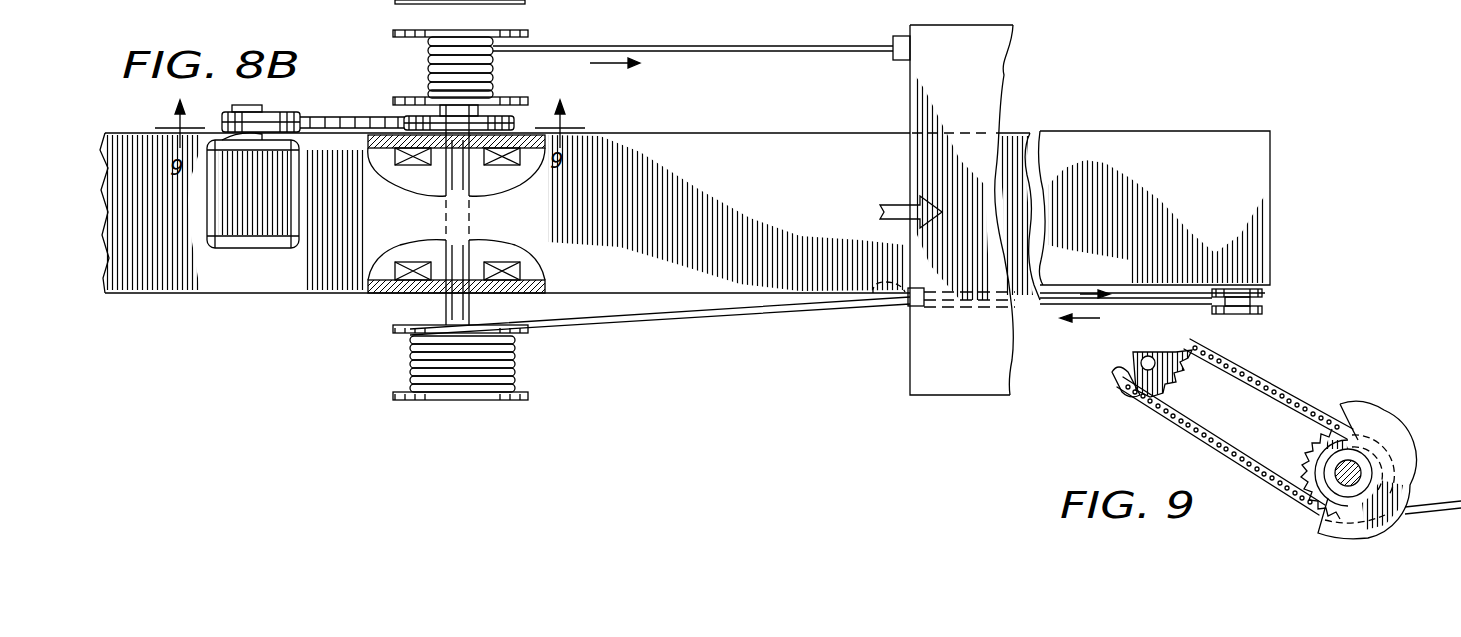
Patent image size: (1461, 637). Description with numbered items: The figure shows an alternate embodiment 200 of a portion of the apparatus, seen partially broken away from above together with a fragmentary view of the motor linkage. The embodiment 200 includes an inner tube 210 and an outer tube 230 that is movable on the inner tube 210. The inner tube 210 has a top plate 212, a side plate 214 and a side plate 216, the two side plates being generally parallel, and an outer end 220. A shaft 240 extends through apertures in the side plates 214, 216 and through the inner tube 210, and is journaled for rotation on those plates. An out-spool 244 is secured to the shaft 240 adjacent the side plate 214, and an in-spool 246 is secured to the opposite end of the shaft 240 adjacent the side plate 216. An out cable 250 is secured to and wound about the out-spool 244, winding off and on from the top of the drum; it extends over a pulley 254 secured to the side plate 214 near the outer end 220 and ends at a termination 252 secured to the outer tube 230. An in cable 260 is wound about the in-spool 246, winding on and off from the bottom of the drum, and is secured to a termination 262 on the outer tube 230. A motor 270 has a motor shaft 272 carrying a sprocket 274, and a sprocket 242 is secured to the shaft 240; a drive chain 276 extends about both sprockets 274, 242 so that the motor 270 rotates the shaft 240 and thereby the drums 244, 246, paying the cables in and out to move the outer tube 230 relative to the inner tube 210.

In FIG. 8B, the alternate embodiment 200 is at (358, 100).
In FIG. 8B, the inner tube 210 is at (690, 108).
In FIG. 8B, the top plate 212 is at (790, 142).
In FIG. 8B, the side plate 214 is at (395, 262).
In FIG. 8B, the side plate 216 is at (380, 150).
In FIG. 8B, the outer end 220 is at (1272, 140).
In FIG. 8B, the outer tube 230 is at (990, 68).
In FIG. 8B, the shaft 240 is at (470, 180).
In FIG. 9, the shaft 240 is at (1403, 502).
In FIG. 9, the sprocket 242 is at (1316, 418).
In FIG. 8B, the out-spool 244 is at (490, 2).
In FIG. 8B, the in-spool 246 is at (390, 30).
In FIG. 9, the in-spool 246 is at (1380, 413).
In FIG. 8B, the out cable 250 is at (695, 322).
In FIG. 8B, the termination 252 is at (890, 280).
In FIG. 8B, the pulley 254 is at (1250, 316).
In FIG. 8B, the in cable 260 is at (840, 46).
In FIG. 8B, the termination 262 is at (898, 62).
In FIG. 8B, the motor 270 is at (215, 215).
In FIG. 8B, the motor shaft 272 is at (261, 118).
In FIG. 9, the motor shaft 272 is at (1140, 356).
In FIG. 9, the sprocket 274 is at (1130, 392).
In FIG. 8B, the drive chain 276 is at (352, 122).
In FIG. 9, the drive chain 276 is at (1252, 376).